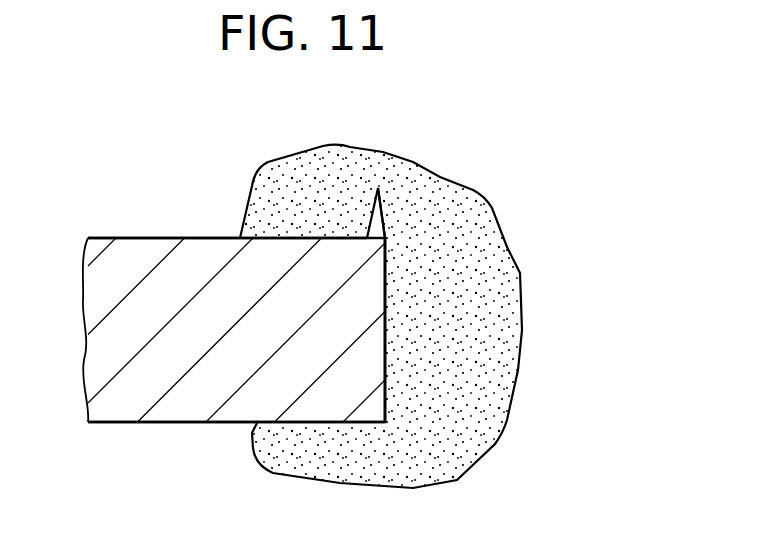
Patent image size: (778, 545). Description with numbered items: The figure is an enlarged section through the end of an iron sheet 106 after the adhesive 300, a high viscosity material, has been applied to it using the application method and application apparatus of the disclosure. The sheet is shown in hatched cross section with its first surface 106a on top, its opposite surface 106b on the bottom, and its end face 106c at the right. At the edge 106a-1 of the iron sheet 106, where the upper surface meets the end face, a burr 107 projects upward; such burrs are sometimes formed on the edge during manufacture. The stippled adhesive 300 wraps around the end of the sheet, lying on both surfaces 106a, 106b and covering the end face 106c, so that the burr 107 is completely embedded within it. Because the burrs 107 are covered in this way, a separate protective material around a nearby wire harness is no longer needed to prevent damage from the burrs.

The iron sheet 106 is at (92, 382).
The surface of iron sheet 106a is at (197, 237).
The surface of iron sheet 106b is at (190, 422).
The end face of iron sheet 106c is at (387, 353).
The edge of iron sheet 106a-1 is at (385, 238).
The burr 107 is at (380, 222).
The adhesive 300 is at (507, 308).